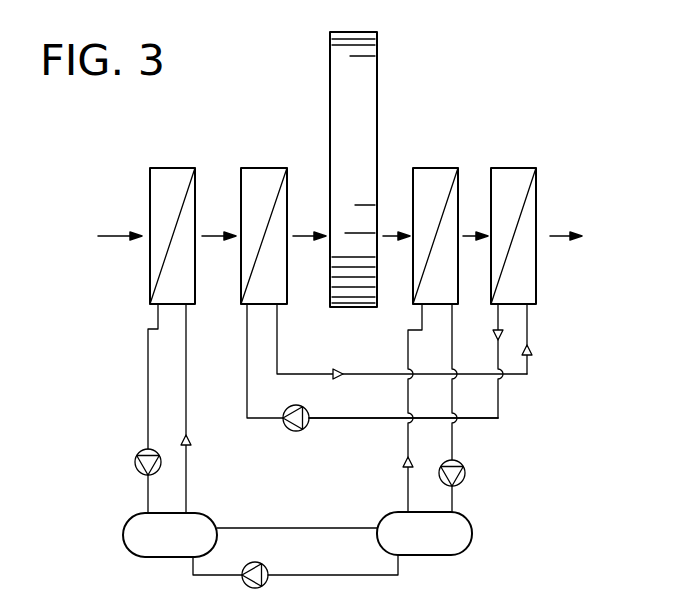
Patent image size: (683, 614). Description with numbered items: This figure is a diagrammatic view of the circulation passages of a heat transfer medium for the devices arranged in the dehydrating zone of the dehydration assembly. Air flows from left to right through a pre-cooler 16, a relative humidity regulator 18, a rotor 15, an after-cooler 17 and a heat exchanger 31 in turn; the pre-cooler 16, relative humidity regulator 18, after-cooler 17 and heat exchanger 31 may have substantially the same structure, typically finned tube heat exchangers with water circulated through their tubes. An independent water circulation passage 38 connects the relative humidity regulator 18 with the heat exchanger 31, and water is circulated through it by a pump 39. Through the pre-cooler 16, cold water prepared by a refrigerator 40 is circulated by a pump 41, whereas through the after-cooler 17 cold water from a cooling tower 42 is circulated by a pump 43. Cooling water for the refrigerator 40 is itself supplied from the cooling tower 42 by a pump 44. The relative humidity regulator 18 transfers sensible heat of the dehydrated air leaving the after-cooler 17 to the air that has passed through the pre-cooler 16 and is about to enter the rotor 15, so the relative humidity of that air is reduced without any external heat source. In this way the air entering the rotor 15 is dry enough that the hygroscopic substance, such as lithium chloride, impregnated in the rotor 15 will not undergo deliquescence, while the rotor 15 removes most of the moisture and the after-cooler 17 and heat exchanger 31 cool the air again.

The rotor 15 is at (366, 86).
The pre-cooler 16 is at (173, 167).
The after-cooler 17 is at (437, 167).
The relative humidity regulator 18 is at (265, 167).
The heat exchanger 31 is at (514, 167).
The independent water circulation passage 38 is at (345, 420).
The pump 39 is at (296, 431).
The refrigerator 40 is at (124, 545).
The pump 41 is at (135, 462).
The cooling tower 42 is at (472, 535).
The pump 43 is at (465, 473).
The pump 44 is at (265, 566).